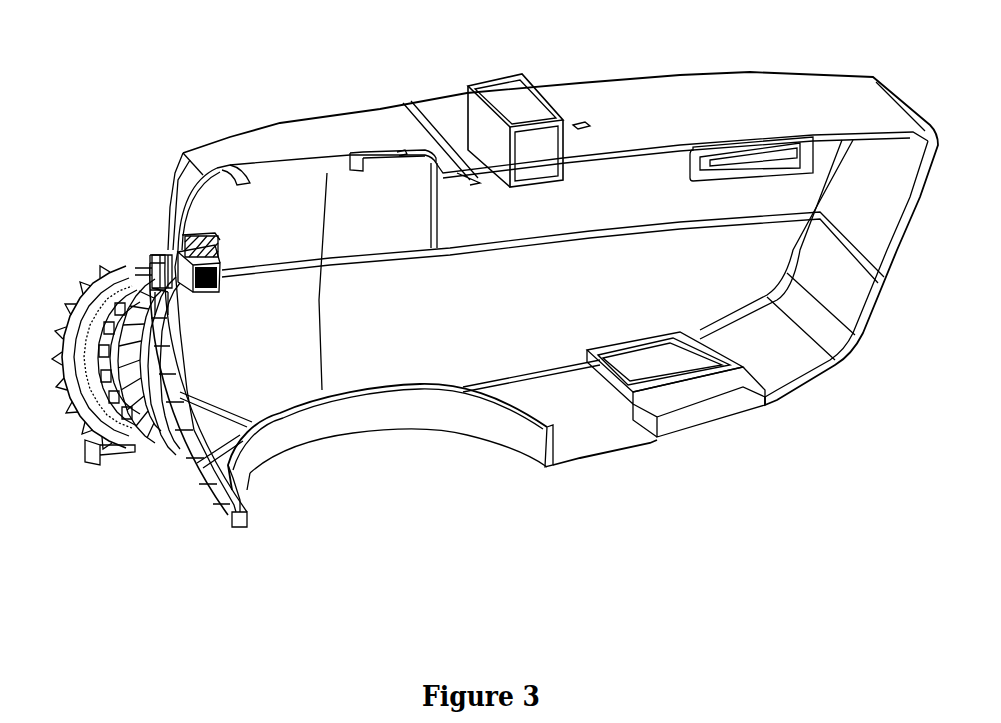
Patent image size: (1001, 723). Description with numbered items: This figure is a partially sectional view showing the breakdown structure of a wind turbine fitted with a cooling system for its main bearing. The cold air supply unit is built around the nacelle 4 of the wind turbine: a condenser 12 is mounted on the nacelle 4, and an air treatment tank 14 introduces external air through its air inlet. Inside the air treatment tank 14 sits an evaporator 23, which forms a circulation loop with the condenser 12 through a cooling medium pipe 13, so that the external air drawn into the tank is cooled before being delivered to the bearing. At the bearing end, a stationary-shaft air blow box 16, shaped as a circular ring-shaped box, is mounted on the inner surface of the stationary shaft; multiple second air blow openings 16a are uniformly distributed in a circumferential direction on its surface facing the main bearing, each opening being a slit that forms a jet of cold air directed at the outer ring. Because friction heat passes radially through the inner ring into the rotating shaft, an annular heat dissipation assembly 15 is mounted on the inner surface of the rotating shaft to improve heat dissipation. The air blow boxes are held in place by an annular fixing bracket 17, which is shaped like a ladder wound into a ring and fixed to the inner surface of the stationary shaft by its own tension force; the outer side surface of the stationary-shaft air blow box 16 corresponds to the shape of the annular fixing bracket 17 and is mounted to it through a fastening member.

The nacelle 4 is at (553, 299).
The condenser 12 is at (512, 92).
The cooling medium pipe 13 is at (427, 197).
The air treatment tank 14 is at (215, 237).
The annular heat dissipation assembly 15 is at (90, 380).
The stationary-shaft air blow box 16 is at (130, 440).
The second air blow openings 16a is at (97, 308).
The annular fixing bracket 17 is at (180, 457).
The evaporator 23 is at (187, 240).